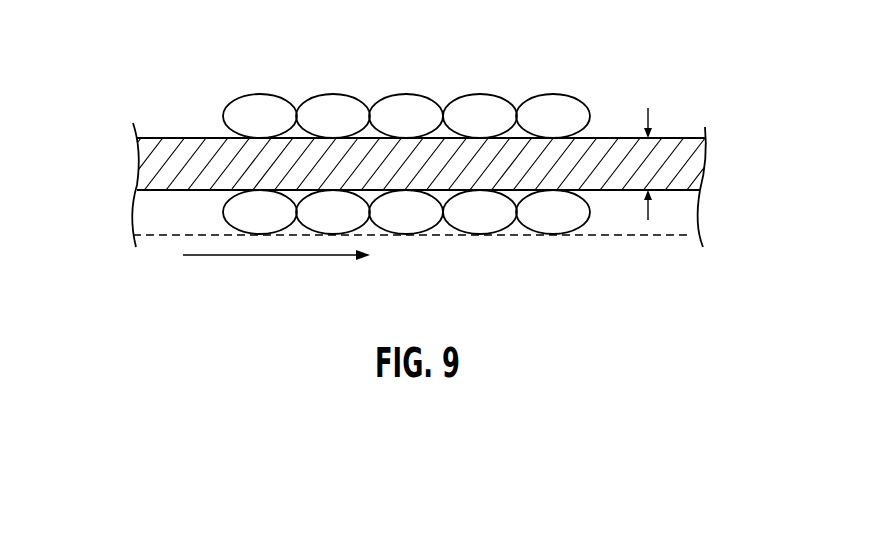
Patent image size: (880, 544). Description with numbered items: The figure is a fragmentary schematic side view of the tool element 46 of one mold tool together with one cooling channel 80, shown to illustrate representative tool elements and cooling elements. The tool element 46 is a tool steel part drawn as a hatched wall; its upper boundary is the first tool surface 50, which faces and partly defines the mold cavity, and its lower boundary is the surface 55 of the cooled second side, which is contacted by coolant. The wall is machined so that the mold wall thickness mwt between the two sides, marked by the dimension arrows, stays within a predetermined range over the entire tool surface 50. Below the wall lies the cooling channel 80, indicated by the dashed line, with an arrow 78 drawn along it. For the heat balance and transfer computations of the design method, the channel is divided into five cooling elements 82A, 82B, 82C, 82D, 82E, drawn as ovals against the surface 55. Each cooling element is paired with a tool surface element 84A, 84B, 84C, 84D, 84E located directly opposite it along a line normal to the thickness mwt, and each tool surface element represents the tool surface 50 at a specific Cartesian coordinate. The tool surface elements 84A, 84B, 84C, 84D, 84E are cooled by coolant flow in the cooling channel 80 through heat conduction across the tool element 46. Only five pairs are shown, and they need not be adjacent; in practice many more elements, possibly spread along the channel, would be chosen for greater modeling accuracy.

The tool element 46 is at (145, 158).
The first tool surface 50 is at (161, 131).
The surface of the second side 55 is at (206, 199).
The flow direction arrow 78 is at (207, 258).
The cooling channel 80 is at (197, 223).
The cooling element 82A is at (260, 234).
The cooling element 82B is at (333, 234).
The cooling element 82C is at (406, 234).
The cooling element 82D is at (480, 234).
The cooling element 82E is at (553, 234).
The tool surface element 84A is at (261, 93).
The tool surface element 84B is at (334, 93).
The tool surface element 84C is at (407, 93).
The tool surface element 84D is at (481, 93).
The tool surface element 84E is at (554, 93).
The mold wall thickness mwt is at (652, 126).